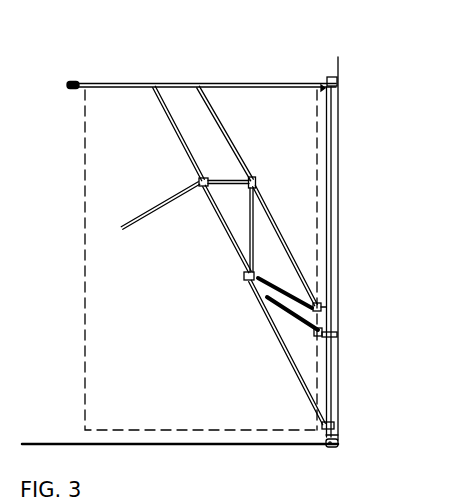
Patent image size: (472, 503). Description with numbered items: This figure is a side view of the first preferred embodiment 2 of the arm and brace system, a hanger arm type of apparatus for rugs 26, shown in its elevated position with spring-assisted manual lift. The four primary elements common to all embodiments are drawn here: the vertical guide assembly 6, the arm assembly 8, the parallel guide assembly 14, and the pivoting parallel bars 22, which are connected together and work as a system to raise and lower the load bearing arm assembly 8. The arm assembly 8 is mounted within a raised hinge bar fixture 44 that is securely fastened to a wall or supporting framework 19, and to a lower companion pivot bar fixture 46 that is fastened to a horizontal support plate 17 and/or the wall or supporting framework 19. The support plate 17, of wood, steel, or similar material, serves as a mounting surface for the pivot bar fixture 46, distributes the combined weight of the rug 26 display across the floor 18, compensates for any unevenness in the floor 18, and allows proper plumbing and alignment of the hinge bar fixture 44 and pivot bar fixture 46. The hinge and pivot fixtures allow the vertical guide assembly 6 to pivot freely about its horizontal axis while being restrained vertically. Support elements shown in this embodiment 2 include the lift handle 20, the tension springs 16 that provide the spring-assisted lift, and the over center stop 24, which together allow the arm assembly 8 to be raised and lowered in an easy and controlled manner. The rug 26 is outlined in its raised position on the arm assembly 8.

The first preferred embodiment 2 is at (55, 98).
The vertical guide assembly 6 is at (322, 153).
The arm assembly 8 is at (117, 82).
The parallel guide assembly 14 is at (222, 224).
The tension springs 16 is at (310, 313).
The horizontal support plate 17 is at (334, 448).
The floor 18 is at (180, 445).
The wall or supporting framework 19 is at (338, 188).
The lift handle 20 is at (165, 201).
The pivoting parallel bars 22 is at (218, 127).
The over center stop 24 is at (318, 307).
The rug 26 is at (115, 428).
The hinge bar fixture 44 is at (334, 77).
The pivot bar fixture 46 is at (338, 437).